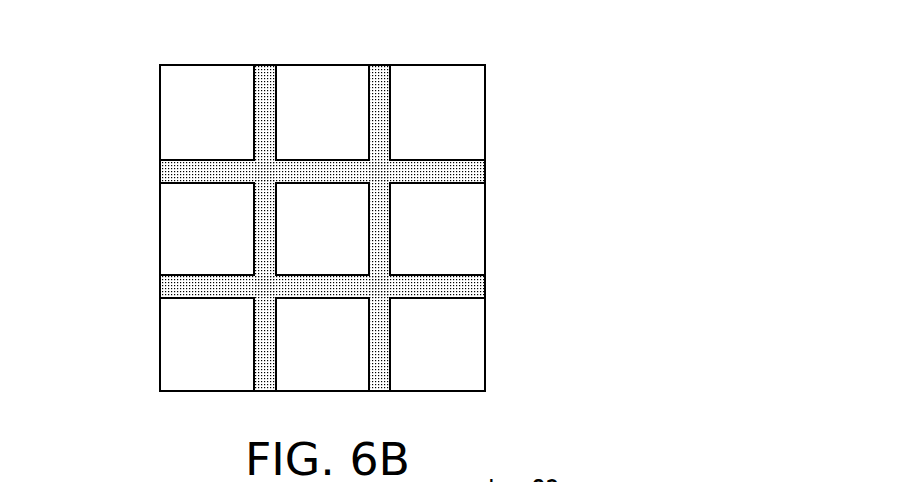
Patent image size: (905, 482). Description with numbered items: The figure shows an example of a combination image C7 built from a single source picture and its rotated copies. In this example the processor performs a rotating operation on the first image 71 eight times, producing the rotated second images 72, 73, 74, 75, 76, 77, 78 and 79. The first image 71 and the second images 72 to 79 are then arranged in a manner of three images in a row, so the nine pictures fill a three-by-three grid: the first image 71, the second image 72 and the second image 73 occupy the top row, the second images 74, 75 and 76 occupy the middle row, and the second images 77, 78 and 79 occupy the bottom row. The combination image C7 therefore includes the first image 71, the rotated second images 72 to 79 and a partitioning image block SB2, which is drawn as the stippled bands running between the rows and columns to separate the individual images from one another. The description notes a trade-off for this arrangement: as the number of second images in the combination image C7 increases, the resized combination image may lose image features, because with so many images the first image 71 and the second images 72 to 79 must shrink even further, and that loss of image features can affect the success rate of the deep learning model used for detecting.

The combination image C7 is at (438, 65).
The partitioning image block SB2 is at (380, 78).
The first image 71 is at (160, 123).
The second image 72 is at (323, 78).
The second image 73 is at (478, 118).
The second image 74 is at (165, 228).
The second image 75 is at (355, 228).
The second image 76 is at (470, 256).
The second image 77 is at (165, 333).
The second image 78 is at (325, 373).
The second image 79 is at (472, 333).